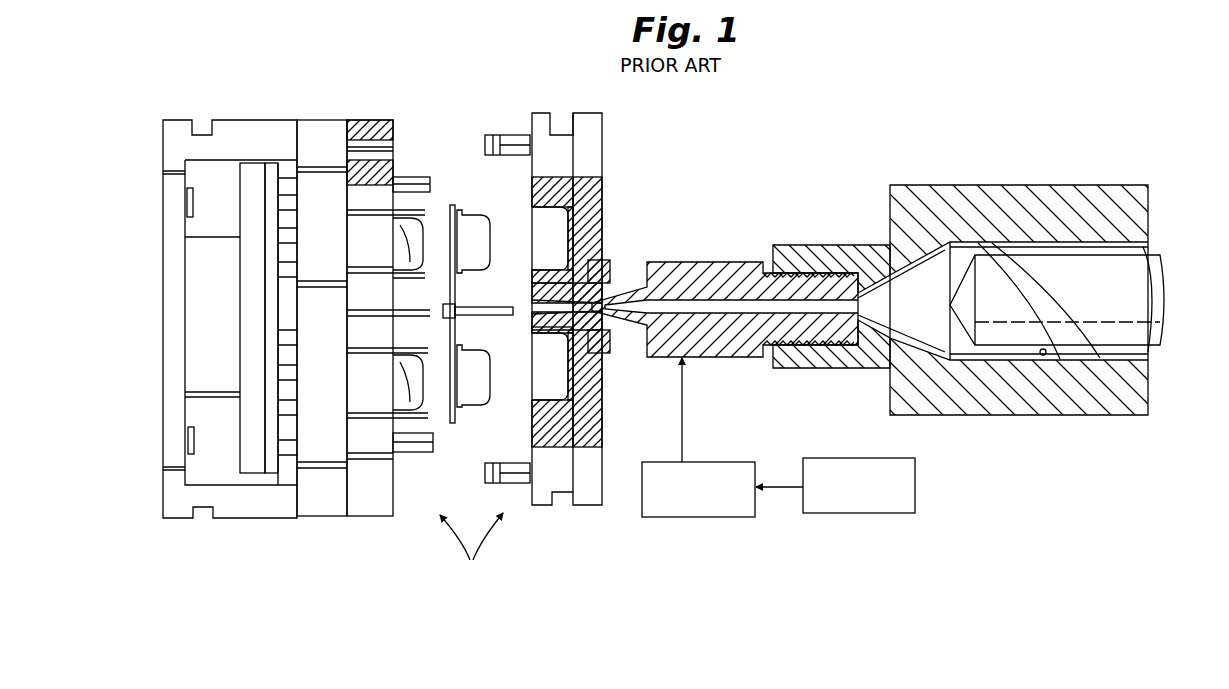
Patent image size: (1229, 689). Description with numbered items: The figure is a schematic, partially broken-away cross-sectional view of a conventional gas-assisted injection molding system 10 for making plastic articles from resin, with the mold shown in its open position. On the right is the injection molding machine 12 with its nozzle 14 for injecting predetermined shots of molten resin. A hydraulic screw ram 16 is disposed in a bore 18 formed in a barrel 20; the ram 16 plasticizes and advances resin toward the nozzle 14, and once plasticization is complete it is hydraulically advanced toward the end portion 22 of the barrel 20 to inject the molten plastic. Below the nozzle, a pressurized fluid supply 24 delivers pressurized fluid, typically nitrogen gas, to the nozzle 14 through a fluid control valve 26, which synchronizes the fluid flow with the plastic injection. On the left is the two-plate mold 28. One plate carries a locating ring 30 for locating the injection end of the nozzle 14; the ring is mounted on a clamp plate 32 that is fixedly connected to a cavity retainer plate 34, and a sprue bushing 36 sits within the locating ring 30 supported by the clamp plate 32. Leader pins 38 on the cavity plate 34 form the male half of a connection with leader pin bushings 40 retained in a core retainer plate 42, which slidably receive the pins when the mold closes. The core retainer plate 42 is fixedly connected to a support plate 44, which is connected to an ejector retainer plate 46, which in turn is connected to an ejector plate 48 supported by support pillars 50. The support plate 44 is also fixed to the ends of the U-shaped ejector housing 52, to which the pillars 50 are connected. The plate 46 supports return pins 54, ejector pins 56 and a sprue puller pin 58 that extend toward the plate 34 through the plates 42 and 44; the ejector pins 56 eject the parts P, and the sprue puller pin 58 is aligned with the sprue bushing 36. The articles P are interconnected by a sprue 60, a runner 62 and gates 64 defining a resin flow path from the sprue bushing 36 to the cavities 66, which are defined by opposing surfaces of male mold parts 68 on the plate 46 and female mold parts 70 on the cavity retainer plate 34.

The gas-assisted injection molding system 10 is at (908, 270).
The injection molding machine 12 is at (1070, 183).
The nozzle 14 is at (708, 360).
The hydraulic screw ram 16 is at (1165, 305).
The bore 18 is at (1042, 354).
The barrel 20 is at (1120, 410).
The end portion of the barrel 22 is at (810, 368).
The pressurized fluid supply 24 is at (898, 513).
The fluid control valve 26 is at (745, 517).
The mold 28 is at (471, 554).
The locating ring 30 is at (605, 352).
The clamp plate 32 is at (592, 505).
The cavity retainer plate 34 is at (542, 505).
The sprue bushing 36 is at (603, 255).
The leader pins 38 is at (520, 155).
The leader pin bushings 40 is at (395, 140).
The core retainer plate 42 is at (385, 516).
The support plate 44 is at (333, 516).
The ejector retainer plate 46 is at (275, 480).
The ejector plate 48 is at (257, 517).
The support pillars 50 is at (205, 388).
The U-shaped ejector housing 52 is at (178, 518).
The return pins 54 is at (410, 178).
The ejector pins 56 is at (403, 240).
The sprue puller pin 58 is at (393, 314).
The sprue 60 is at (475, 316).
The runner 62 is at (456, 305).
The gates 64 is at (450, 327).
The cavities 66 is at (575, 233).
The male mold parts 68 is at (418, 222).
The female mold parts 70 is at (602, 225).
The parts P is at (488, 218).